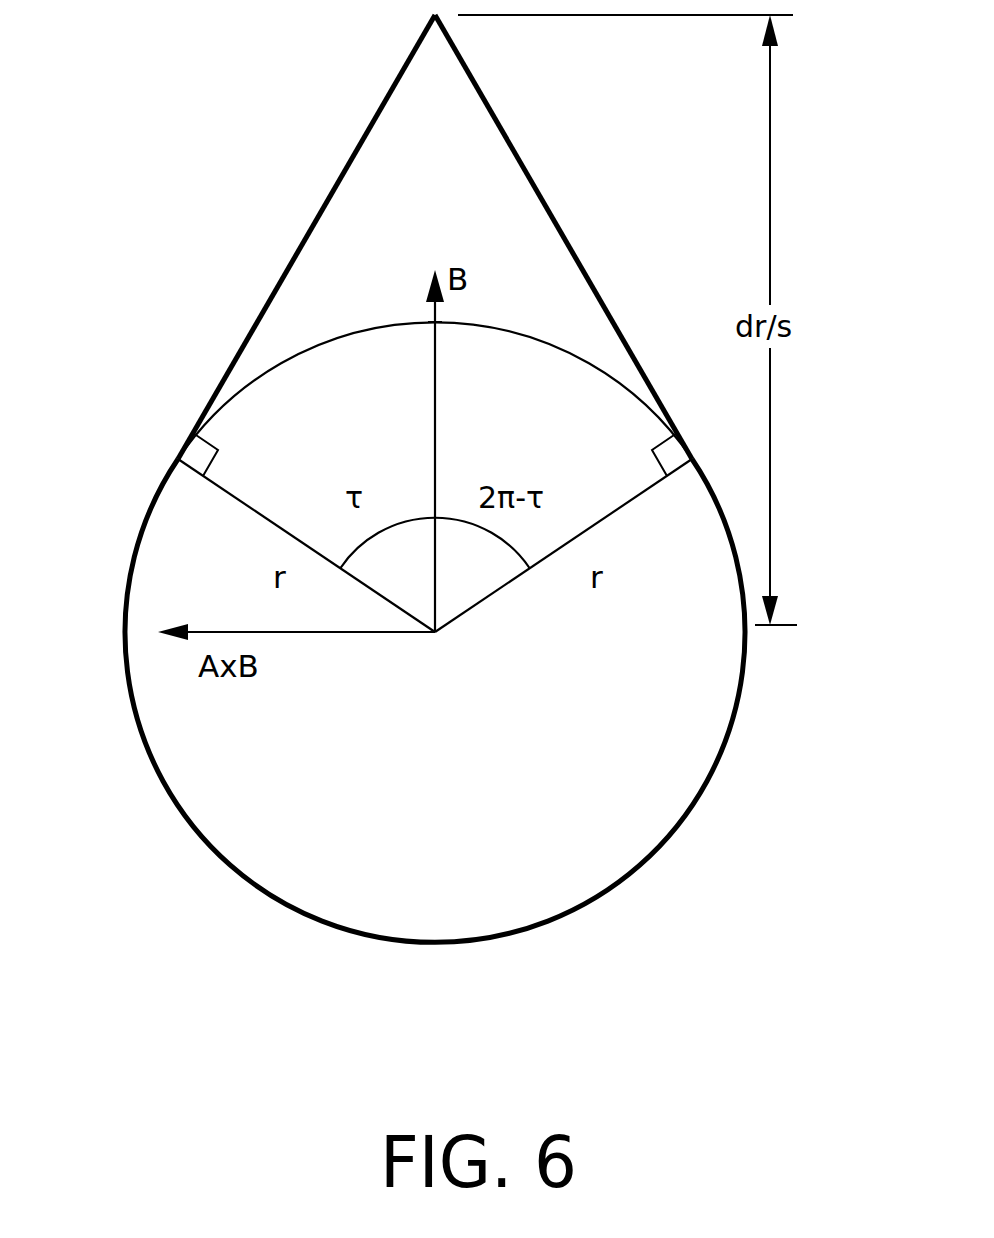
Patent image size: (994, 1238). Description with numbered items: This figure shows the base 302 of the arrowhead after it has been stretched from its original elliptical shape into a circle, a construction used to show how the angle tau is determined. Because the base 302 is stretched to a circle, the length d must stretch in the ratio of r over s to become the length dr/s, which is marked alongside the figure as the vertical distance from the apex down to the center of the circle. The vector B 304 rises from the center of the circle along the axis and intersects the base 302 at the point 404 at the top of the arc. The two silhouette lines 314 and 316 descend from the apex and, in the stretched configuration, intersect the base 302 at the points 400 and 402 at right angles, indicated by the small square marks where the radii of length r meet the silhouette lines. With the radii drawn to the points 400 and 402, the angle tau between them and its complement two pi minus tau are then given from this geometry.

The base 302 is at (673, 830).
The vector B 304 is at (435, 428).
The silhouette line 314 is at (368, 133).
The silhouette line 316 is at (540, 197).
The point 400 is at (180, 460).
The point 402 is at (697, 463).
The point 404 is at (428, 325).